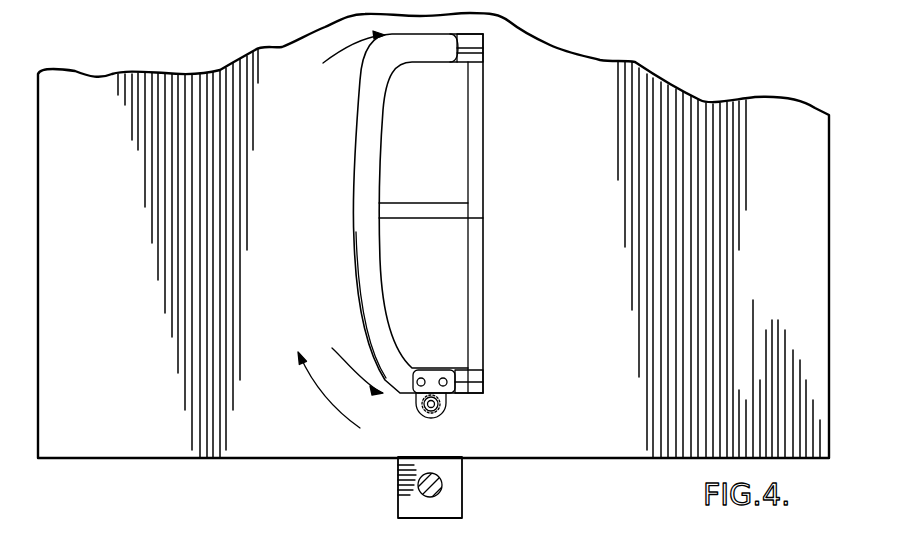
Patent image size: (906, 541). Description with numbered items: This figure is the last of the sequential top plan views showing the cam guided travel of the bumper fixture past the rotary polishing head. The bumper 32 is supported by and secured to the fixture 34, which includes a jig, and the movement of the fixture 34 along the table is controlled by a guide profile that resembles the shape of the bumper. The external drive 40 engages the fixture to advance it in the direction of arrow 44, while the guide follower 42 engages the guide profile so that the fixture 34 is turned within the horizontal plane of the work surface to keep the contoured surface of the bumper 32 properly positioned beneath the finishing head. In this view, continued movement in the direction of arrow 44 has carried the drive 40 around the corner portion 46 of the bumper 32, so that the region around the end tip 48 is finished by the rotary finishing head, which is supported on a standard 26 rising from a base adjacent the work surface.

The standard 26 is at (462, 490).
The bumper 32 is at (368, 123).
The fixture 34 is at (500, 220).
The external drive 40 is at (447, 407).
The guide follower 42 is at (423, 367).
The arrow 44 is at (327, 400).
The corner portion 46 is at (334, 213).
The end tip 48 is at (470, 43).